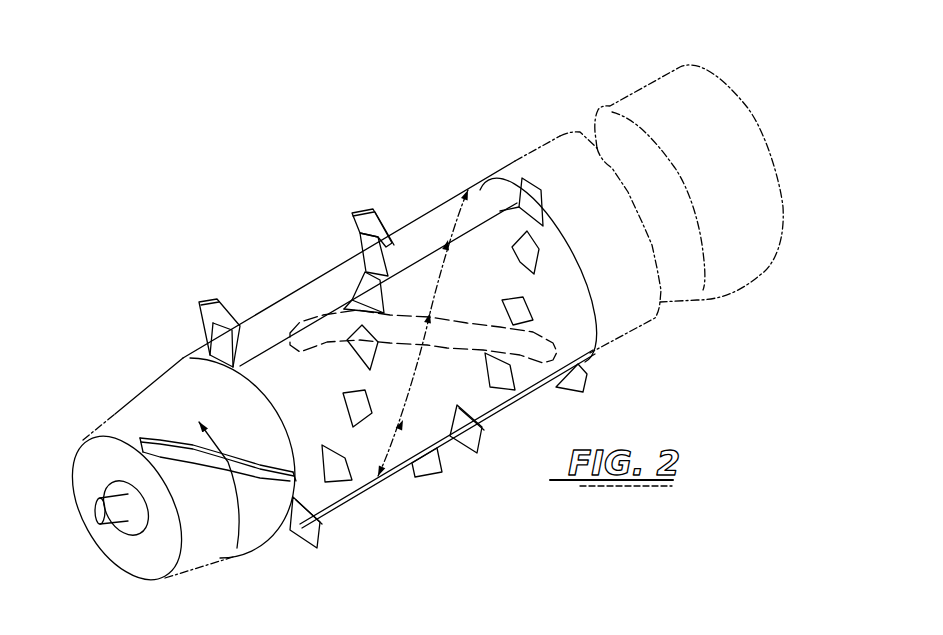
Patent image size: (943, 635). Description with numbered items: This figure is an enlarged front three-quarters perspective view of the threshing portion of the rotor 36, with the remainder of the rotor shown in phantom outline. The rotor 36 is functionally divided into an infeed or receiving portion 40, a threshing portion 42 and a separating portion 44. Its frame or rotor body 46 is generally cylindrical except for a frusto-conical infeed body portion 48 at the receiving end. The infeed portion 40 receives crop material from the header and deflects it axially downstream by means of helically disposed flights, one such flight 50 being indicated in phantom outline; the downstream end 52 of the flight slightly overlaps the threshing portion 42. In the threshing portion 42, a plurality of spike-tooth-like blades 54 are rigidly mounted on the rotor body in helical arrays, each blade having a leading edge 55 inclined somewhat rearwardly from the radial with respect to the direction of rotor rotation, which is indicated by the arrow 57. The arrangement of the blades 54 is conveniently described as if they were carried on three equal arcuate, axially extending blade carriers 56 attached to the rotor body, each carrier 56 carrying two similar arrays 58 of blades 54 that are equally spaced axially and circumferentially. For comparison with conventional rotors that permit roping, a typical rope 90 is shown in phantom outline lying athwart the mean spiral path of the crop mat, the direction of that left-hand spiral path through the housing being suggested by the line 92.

The rotor 36 is at (205, 247).
The infeed portion 40 is at (136, 376).
The threshing portion 42 is at (295, 274).
The separating portion 44 is at (645, 76).
The rotor body 46 is at (562, 148).
The frusto-conical infeed body portion 48 is at (116, 415).
The helically disposed flight 50 is at (173, 440).
The downstream end of flight 52 is at (293, 495).
The spike-tooth-like blade 54 is at (359, 208).
The leading edge 55 is at (357, 238).
The blade carrier 56 is at (478, 285).
The arrow indicating rotor rotation 57 is at (240, 510).
The array of blades 58 is at (308, 242).
The rope 90 is at (443, 350).
The spiral path line 92 is at (413, 373).